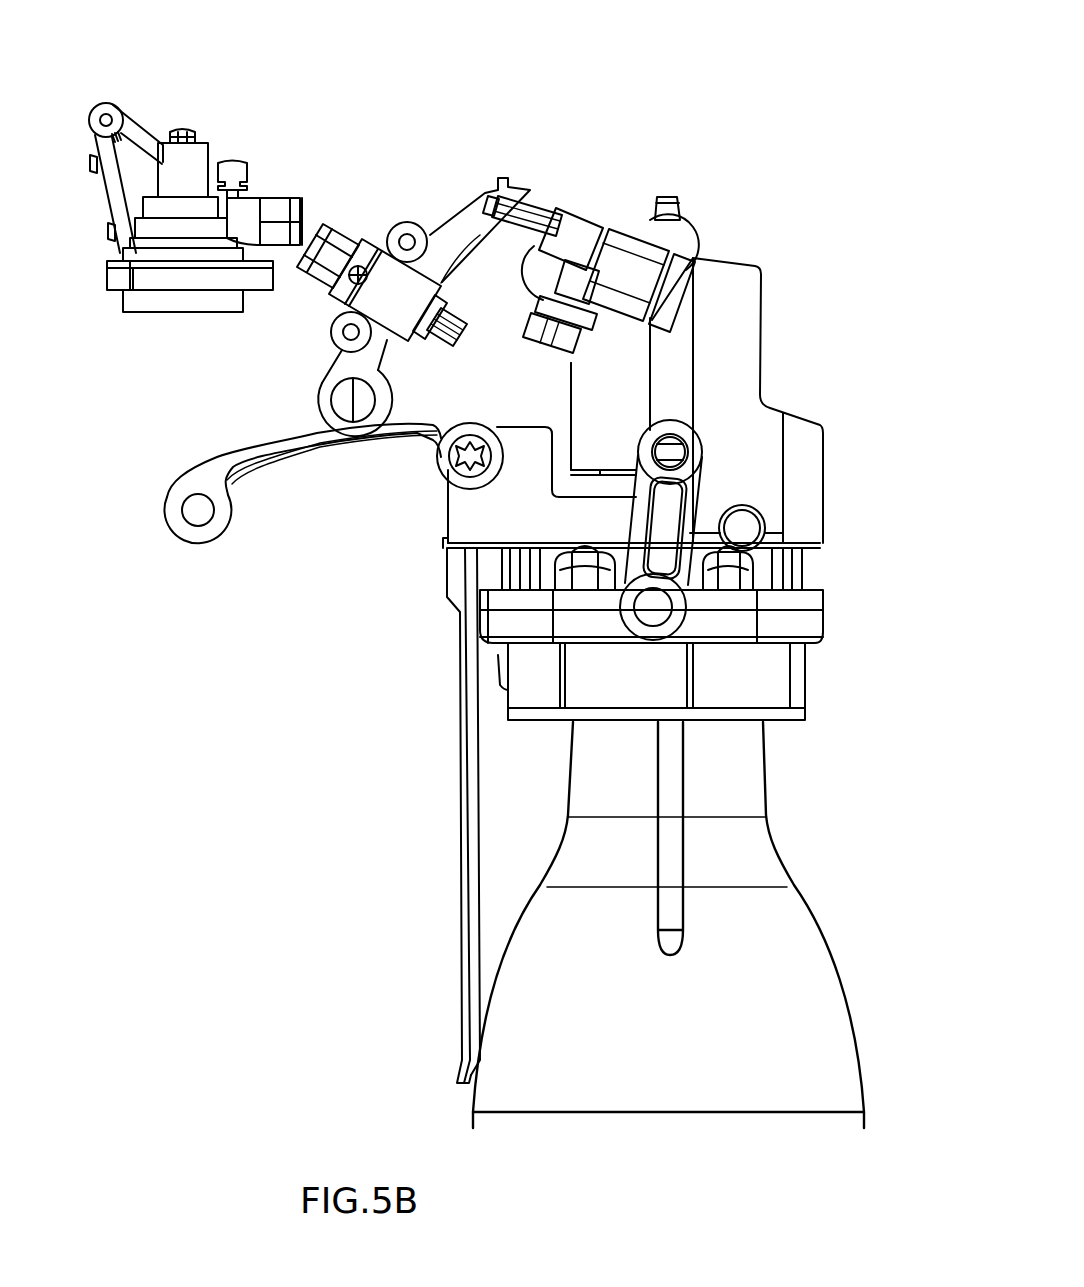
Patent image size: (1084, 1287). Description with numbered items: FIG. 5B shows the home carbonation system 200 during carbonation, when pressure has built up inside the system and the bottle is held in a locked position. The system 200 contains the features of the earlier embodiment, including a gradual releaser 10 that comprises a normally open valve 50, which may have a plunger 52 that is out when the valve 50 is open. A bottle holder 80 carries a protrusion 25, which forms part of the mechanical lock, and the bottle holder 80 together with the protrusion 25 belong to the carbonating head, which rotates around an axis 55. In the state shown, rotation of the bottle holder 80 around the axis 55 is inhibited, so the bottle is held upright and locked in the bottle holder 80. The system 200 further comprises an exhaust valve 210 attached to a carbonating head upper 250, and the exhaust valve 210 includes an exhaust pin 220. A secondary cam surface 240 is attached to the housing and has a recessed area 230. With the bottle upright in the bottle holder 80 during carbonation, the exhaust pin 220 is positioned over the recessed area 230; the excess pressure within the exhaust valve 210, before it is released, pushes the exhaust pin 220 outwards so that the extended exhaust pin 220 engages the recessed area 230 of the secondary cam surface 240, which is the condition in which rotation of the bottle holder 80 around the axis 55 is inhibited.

The home carbonation system 200 is at (722, 70).
The gradual releaser 10 is at (792, 920).
The protrusion 25 is at (752, 303).
The normally open valve 50 is at (347, 287).
The plunger 52 is at (452, 343).
The axis 55 is at (745, 530).
The bottle holder 80 is at (802, 687).
The exhaust valve 210 is at (582, 221).
The exhaust pin 220 is at (542, 220).
The recessed area 230 is at (522, 200).
The secondary cam surface 240 is at (450, 235).
The carbonating head upper 250 is at (672, 208).